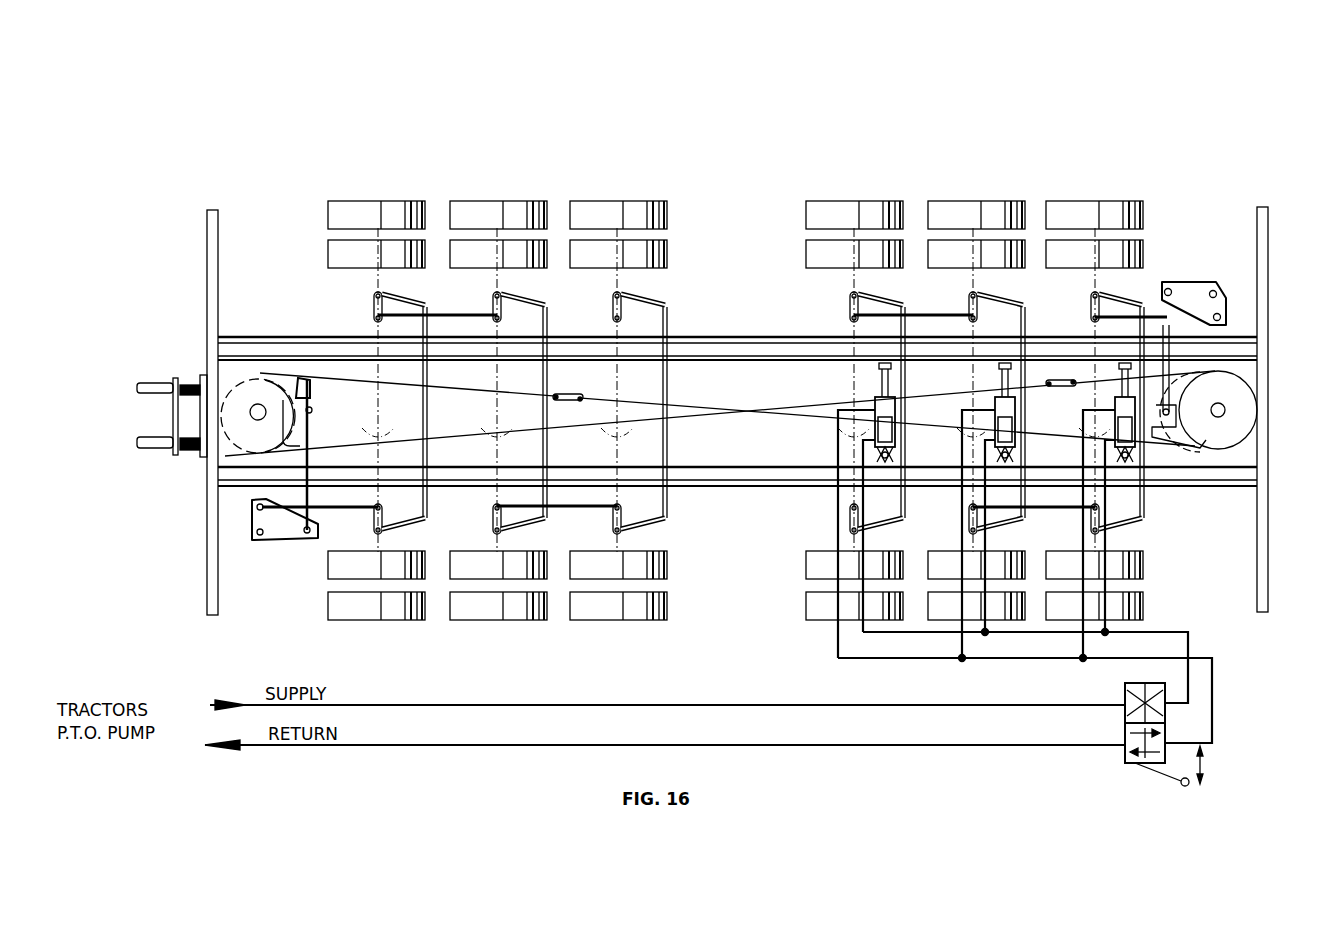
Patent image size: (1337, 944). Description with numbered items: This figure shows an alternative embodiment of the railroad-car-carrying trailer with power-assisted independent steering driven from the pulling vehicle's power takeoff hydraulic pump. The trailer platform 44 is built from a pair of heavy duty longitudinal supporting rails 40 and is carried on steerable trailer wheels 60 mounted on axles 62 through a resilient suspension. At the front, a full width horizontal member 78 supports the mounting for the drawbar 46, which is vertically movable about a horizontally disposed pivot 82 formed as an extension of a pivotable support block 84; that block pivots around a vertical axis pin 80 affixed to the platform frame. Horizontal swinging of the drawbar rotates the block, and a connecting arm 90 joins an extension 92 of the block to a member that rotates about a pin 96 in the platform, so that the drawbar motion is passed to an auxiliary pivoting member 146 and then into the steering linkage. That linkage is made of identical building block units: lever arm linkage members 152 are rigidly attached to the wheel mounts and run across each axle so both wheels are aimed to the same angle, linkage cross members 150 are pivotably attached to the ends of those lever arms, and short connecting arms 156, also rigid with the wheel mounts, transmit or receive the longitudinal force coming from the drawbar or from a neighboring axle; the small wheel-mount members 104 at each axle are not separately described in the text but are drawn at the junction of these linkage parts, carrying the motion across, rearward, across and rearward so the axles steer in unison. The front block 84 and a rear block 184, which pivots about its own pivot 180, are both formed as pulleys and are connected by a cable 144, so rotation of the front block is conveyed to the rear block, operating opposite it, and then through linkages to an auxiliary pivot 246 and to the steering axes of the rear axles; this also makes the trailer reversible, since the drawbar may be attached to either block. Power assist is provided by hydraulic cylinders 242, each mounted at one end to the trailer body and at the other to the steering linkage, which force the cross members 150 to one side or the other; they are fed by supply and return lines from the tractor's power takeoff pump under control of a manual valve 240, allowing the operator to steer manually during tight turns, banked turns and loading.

The full width horizontal member 78 is at (207, 285).
The trailer wheels 60 is at (376, 202).
The platform 44 is at (714, 336).
The supporting rails 40 is at (772, 372).
The linkage cross members 150 is at (428, 379).
The steering arm 104 is at (374, 307).
The linkage members 152 is at (415, 279).
The short connecting arms 156 is at (443, 303).
The cable 144 is at (710, 408).
The axles 62 is at (1086, 448).
The hydraulic cylinders 242 is at (872, 428).
The manual valve 240 is at (1123, 753).
The drawbar 46 is at (155, 383).
The horizontally disposed pivot 82 is at (180, 384).
The pivotable support block 84 is at (262, 380).
The pin 80 is at (258, 426).
The extension 92 is at (298, 385).
The connecting arm 90 is at (312, 412).
The pin 96 is at (260, 540).
The auxiliary pivoting member 146 is at (290, 530).
The auxiliary pivot 246 is at (1195, 294).
The rear block 184 is at (1244, 404).
The pivot 180 is at (1218, 417).